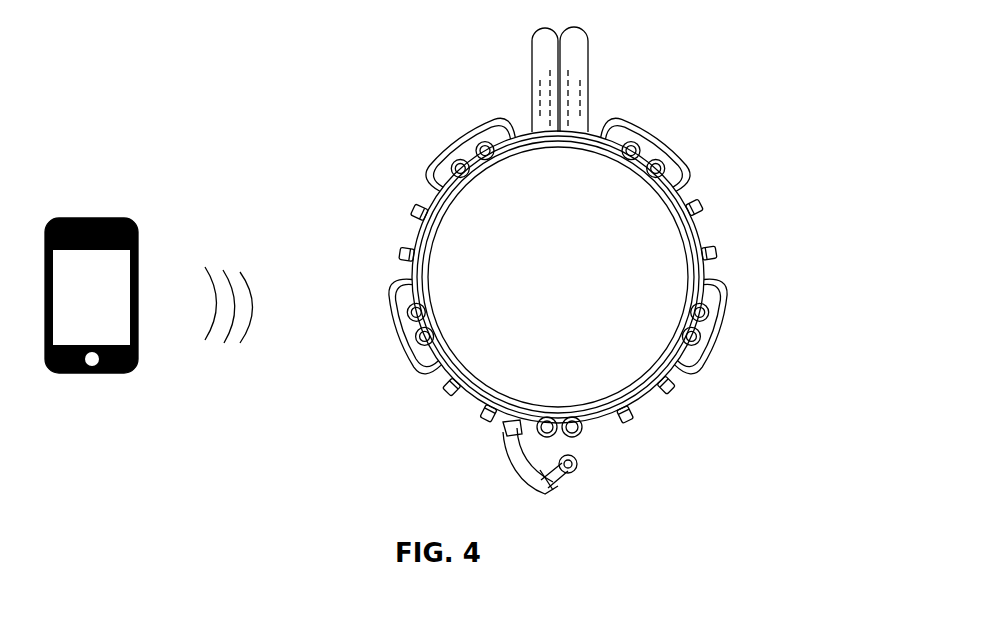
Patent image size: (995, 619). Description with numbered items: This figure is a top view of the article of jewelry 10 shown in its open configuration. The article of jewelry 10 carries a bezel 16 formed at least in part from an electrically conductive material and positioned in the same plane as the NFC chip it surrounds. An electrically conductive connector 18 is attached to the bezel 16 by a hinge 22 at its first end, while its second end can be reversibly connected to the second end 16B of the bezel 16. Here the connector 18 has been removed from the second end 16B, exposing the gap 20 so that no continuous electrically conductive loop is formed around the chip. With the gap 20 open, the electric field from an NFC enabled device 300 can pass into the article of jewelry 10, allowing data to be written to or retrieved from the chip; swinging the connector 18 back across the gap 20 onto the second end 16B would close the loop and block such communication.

The article of jewelry 10 is at (723, 87).
The bezel 16 is at (710, 270).
The second end of the bezel 16B is at (585, 437).
The connector 18 is at (507, 459).
The gap 20 is at (560, 417).
The hinge 22 is at (519, 425).
The NFC enabled device 300 is at (149, 295).